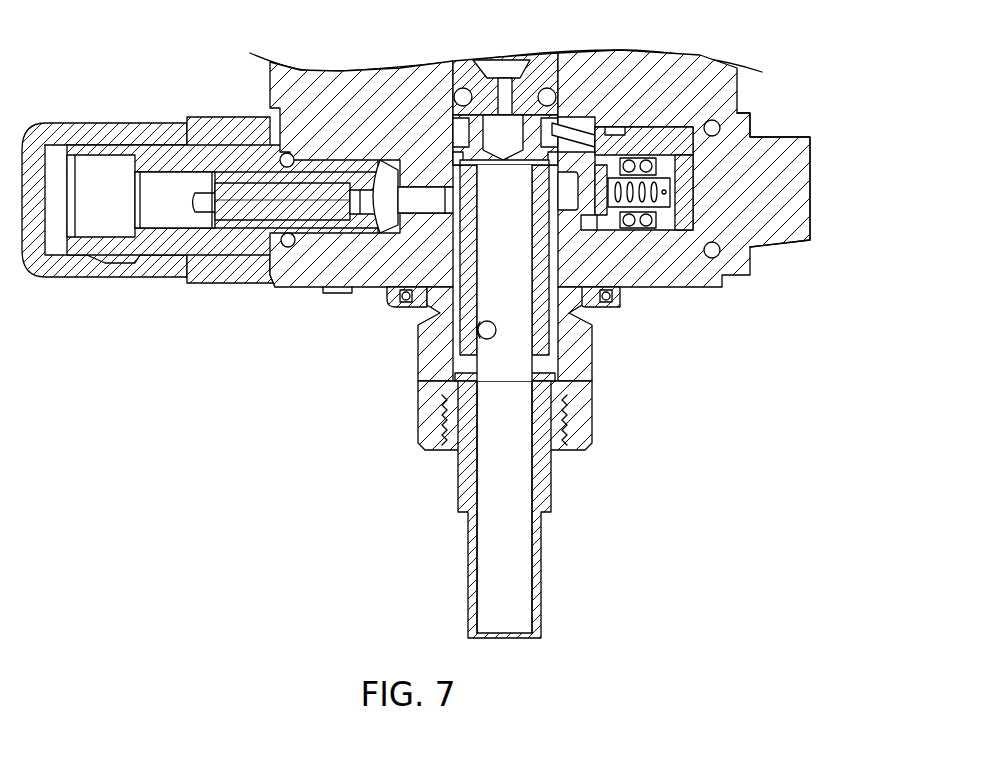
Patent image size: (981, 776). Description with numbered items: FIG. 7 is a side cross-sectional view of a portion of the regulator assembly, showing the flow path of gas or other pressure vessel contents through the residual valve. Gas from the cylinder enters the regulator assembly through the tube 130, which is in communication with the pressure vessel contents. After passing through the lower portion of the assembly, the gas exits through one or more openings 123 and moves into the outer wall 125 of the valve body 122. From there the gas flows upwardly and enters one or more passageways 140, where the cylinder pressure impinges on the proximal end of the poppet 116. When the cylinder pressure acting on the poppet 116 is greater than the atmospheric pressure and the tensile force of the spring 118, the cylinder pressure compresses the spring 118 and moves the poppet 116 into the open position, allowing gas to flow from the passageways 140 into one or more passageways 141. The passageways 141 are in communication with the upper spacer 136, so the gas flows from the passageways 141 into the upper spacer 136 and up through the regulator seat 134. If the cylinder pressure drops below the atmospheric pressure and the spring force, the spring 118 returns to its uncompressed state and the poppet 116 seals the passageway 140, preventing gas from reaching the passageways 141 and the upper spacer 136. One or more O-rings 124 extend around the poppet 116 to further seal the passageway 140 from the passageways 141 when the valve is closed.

The poppet 116 is at (640, 182).
The spring 118 is at (694, 133).
The valve body 122 is at (720, 170).
The openings 123 is at (478, 333).
The O-rings 124 is at (590, 225).
The outer wall 125 is at (540, 328).
The tube 130 is at (500, 500).
The regulator seat 134 is at (545, 72).
The upper spacer 136 is at (530, 110).
The passageways 140 is at (565, 208).
The passageways 141 is at (578, 135).